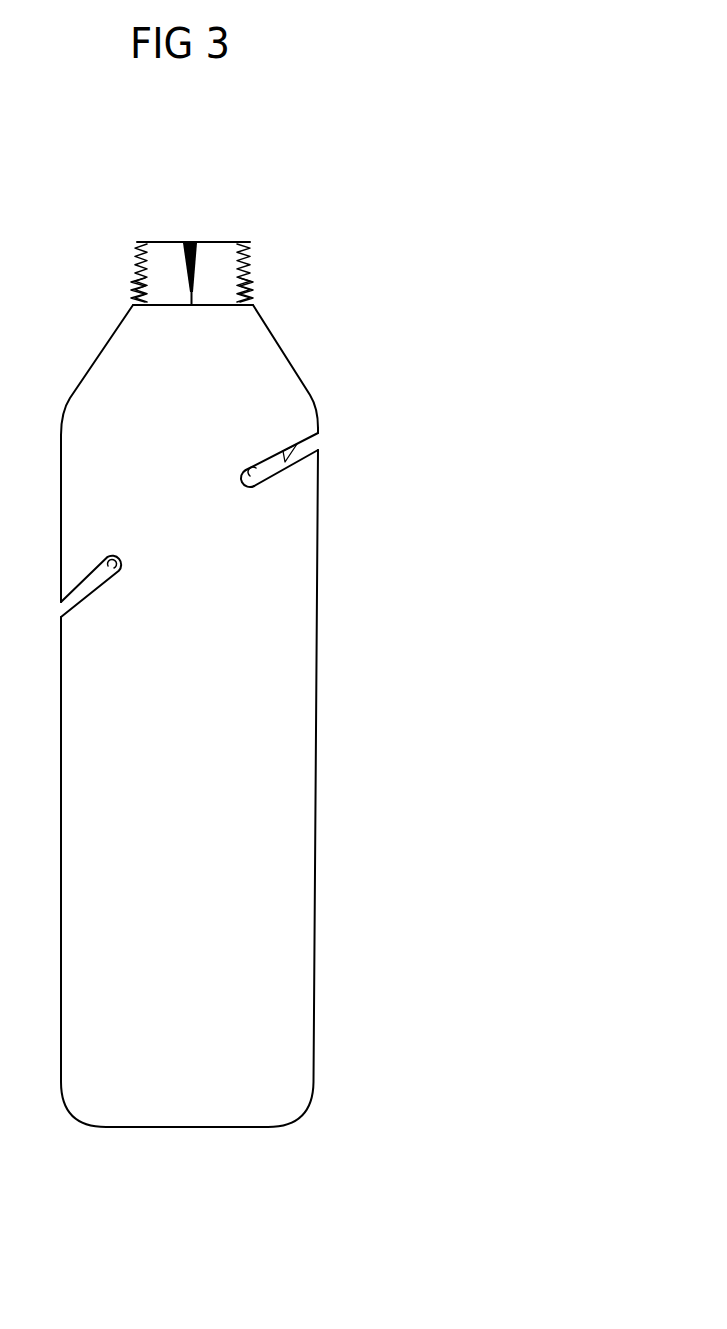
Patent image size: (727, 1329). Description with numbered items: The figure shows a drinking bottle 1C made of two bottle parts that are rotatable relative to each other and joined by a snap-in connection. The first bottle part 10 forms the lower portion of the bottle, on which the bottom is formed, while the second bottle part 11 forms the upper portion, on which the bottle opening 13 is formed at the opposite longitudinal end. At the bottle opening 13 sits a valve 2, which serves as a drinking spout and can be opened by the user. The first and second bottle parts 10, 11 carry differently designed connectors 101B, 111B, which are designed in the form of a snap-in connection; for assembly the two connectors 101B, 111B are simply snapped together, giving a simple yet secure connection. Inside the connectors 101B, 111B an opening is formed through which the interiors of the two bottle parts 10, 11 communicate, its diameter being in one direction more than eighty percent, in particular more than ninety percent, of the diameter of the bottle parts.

The drinking bottle 1C is at (426, 523).
The first bottle part 10 is at (316, 717).
The second bottle part 11 is at (312, 387).
The bottle opening 13 is at (253, 307).
The valve 2 is at (270, 239).
The connector 111B is at (297, 447).
The connector 101B is at (240, 472).